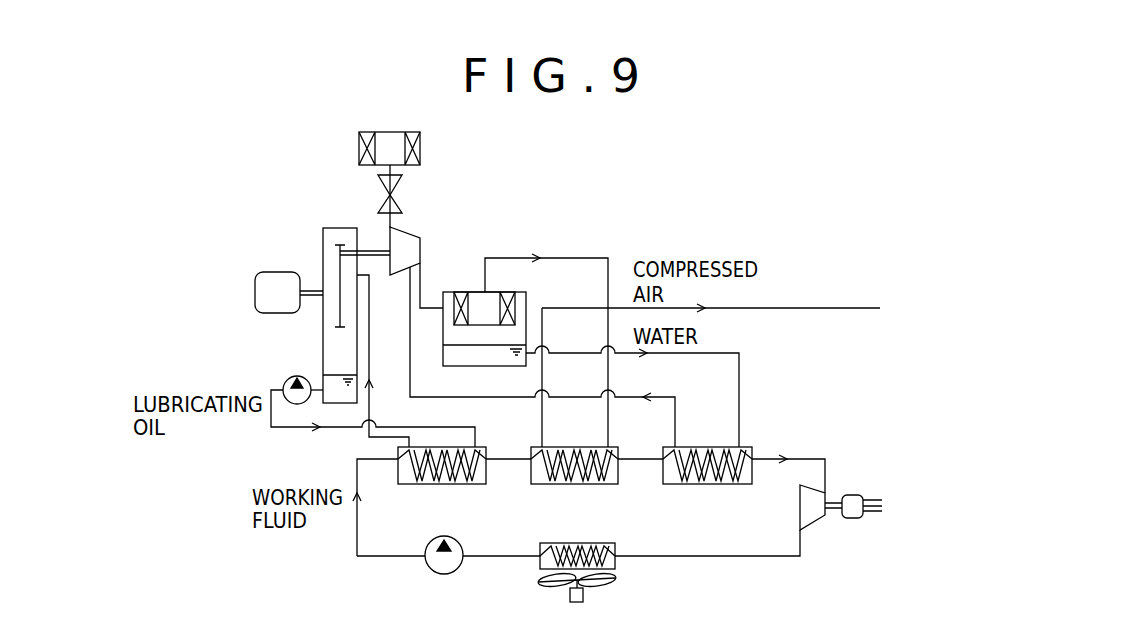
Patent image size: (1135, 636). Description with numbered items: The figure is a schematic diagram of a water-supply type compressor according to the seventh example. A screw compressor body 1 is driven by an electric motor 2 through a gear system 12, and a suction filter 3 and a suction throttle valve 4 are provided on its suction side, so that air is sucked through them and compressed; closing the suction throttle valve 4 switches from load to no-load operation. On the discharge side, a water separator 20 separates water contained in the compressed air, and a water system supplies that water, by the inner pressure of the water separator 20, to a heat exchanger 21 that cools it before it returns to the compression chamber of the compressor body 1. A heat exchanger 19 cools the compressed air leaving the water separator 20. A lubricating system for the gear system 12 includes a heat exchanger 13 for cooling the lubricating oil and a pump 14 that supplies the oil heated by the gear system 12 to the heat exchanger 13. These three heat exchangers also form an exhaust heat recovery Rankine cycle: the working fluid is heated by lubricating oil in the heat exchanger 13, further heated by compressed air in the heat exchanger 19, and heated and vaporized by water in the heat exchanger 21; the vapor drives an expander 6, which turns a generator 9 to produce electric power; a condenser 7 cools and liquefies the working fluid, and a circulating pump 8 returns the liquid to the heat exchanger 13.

The screw compressor body 1 is at (420, 250).
The electric motor 2 is at (280, 272).
The suction filter 3 is at (421, 149).
The suction throttle valve 4 is at (402, 205).
The expander 6 is at (818, 520).
The condenser 7 is at (602, 543).
The circulating pump 8 is at (455, 537).
The generator 9 is at (860, 520).
The gear system 12 is at (340, 228).
The heat exchanger 13 is at (408, 484).
The pump 14 is at (297, 376).
The heat exchanger 19 is at (540, 484).
The water separator 20 is at (526, 298).
The heat exchanger 21 is at (708, 484).